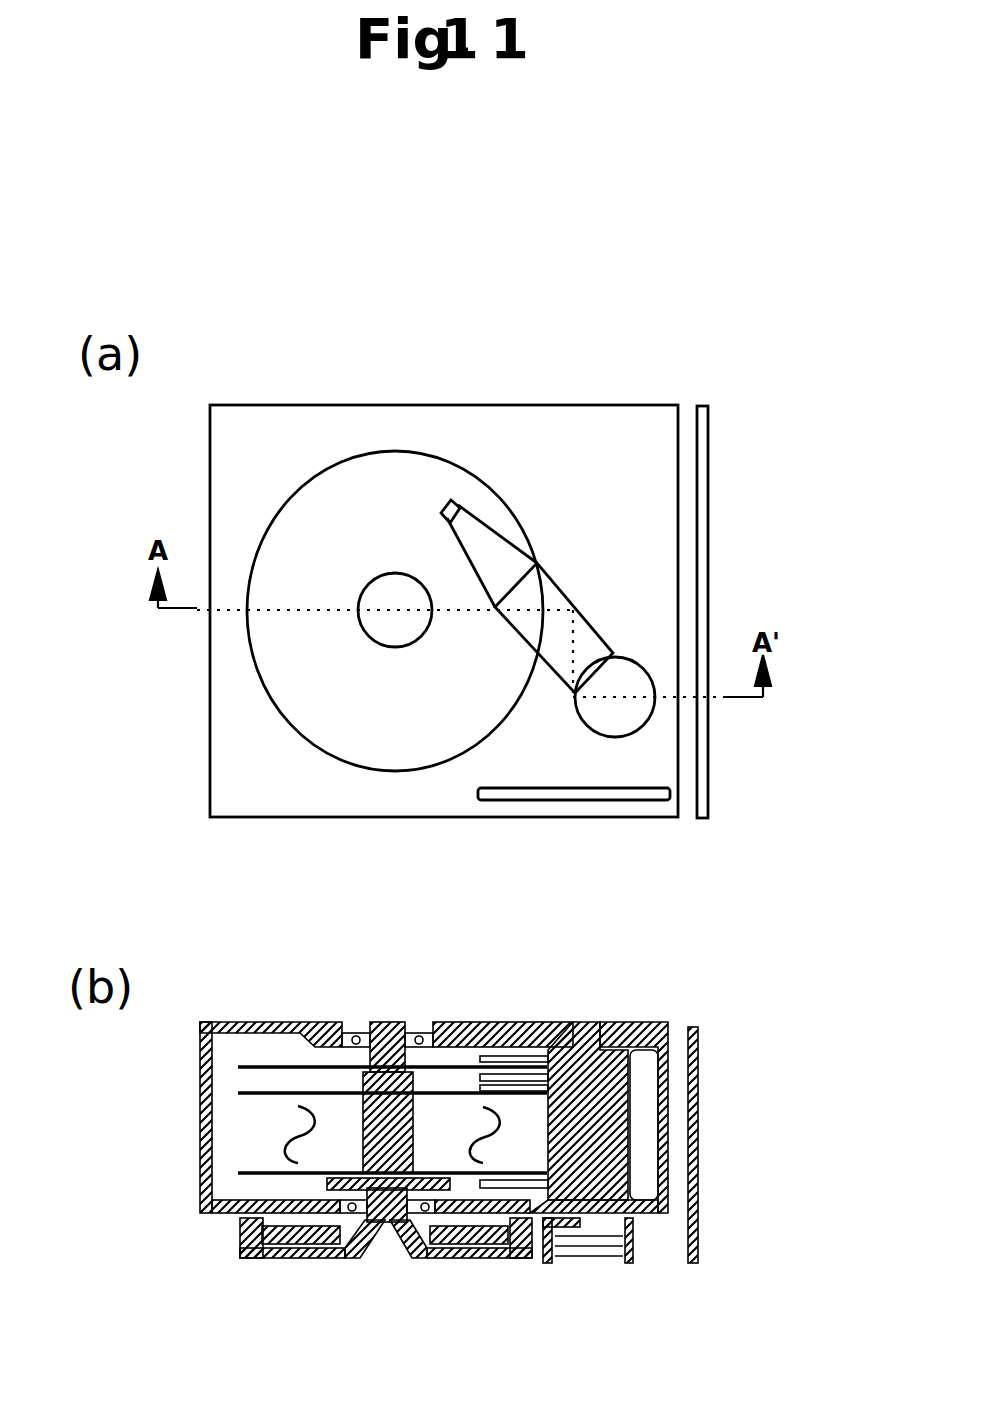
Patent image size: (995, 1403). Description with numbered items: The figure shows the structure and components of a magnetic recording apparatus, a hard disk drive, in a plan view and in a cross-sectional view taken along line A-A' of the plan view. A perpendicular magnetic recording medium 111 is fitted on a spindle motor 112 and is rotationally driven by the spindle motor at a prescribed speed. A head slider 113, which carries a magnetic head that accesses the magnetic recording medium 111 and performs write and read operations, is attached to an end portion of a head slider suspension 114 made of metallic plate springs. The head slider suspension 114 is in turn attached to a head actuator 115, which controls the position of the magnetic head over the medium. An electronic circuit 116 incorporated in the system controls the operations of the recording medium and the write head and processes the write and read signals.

In FIG. 11A, the perpendicular magnetic recording medium 111 is at (395, 458).
In FIG. 11B, the perpendicular magnetic recording medium 111 is at (253, 1063).
In FIG. 11B, the spindle motor 112 is at (397, 1240).
In FIG. 11A, the head slider 113 is at (455, 510).
In FIG. 11B, the head slider 113 is at (485, 1057).
In FIG. 11A, the head slider suspension 114 is at (487, 557).
In FIG. 11B, the head actuator 115 is at (595, 1057).
In FIG. 11A, the electronic circuit 116 is at (610, 800).
In FIG. 11B, the electronic circuit 116 is at (698, 1133).